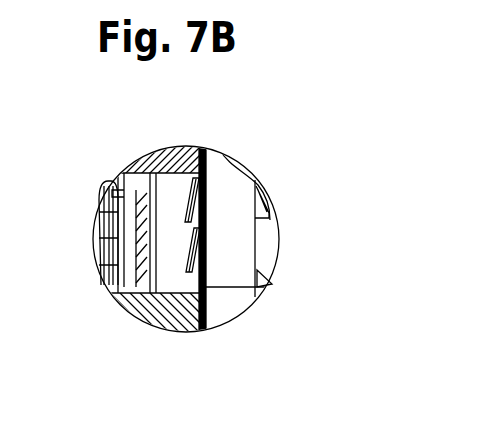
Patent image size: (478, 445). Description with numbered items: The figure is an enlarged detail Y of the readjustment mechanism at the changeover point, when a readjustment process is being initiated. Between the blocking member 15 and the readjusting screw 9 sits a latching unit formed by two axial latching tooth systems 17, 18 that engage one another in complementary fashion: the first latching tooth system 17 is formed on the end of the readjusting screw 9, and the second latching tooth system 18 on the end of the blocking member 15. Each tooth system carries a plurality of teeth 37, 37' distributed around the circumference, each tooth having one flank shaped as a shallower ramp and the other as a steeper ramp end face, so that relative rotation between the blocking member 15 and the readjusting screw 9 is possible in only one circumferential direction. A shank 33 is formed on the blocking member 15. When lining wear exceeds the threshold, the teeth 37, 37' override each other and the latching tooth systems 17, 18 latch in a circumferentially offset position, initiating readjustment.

The detail region Y is at (223, 150).
The readjusting screw 9 is at (249, 242).
The blocking member 15 is at (172, 293).
The first latching tooth system 17 is at (206, 290).
The second latching tooth system 18 is at (178, 290).
The shank 33 is at (100, 256).
The tooth 37 is at (268, 224).
The tooth 37' is at (115, 210).